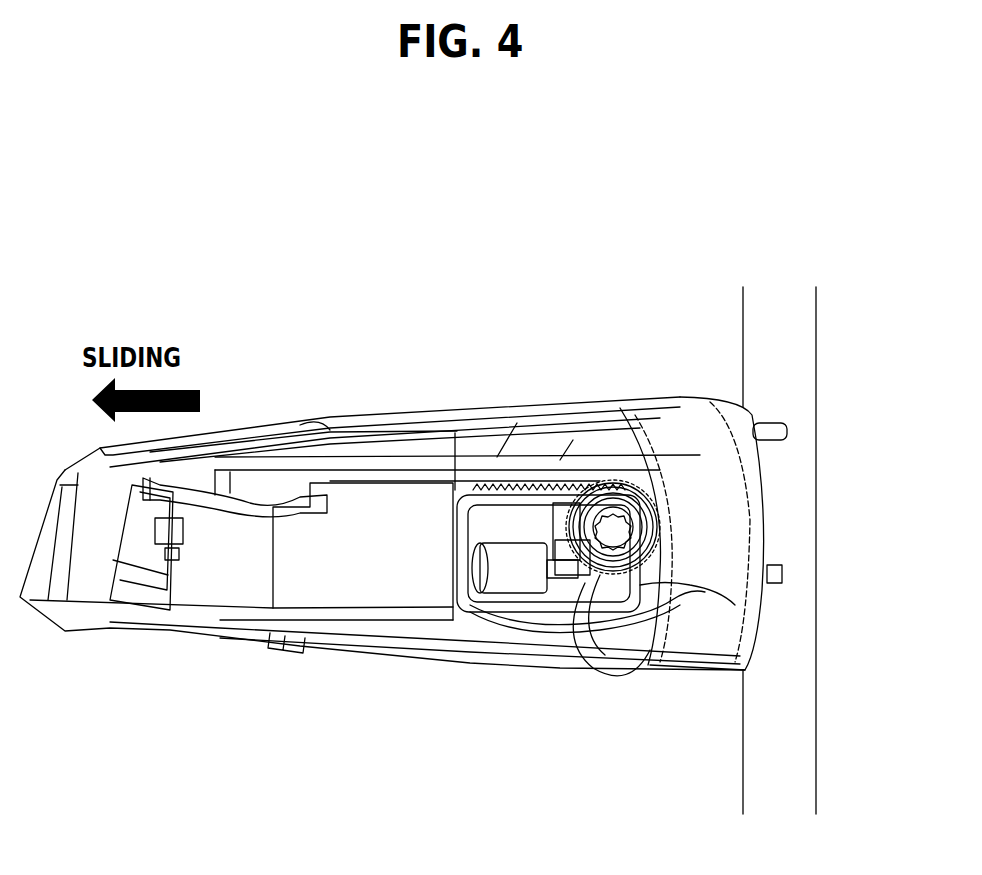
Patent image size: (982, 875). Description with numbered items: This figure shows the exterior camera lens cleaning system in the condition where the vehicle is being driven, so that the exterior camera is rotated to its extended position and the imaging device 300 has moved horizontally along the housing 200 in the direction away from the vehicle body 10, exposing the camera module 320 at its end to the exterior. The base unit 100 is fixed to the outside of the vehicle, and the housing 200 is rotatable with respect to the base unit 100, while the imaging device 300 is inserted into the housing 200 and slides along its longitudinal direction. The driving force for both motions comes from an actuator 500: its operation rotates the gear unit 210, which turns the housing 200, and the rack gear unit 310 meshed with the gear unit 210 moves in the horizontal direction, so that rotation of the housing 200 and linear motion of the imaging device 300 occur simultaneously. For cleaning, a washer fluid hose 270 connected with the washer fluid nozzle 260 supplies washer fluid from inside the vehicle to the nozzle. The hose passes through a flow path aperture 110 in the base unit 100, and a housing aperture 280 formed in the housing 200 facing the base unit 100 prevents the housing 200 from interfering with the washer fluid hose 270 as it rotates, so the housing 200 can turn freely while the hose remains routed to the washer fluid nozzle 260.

The vehicle body 10 is at (763, 338).
The base unit 100 is at (718, 535).
The flow path aperture 110 is at (595, 594).
The housing 200 is at (495, 430).
The gear unit 210 is at (628, 550).
The washer fluid nozzle 260 is at (170, 627).
The washer fluid hose 270 is at (347, 628).
The housing aperture 280 is at (660, 584).
The imaging device 300 is at (227, 583).
The rack gear unit 310 is at (517, 487).
The camera module 320 is at (135, 587).
The actuator 500 is at (507, 567).